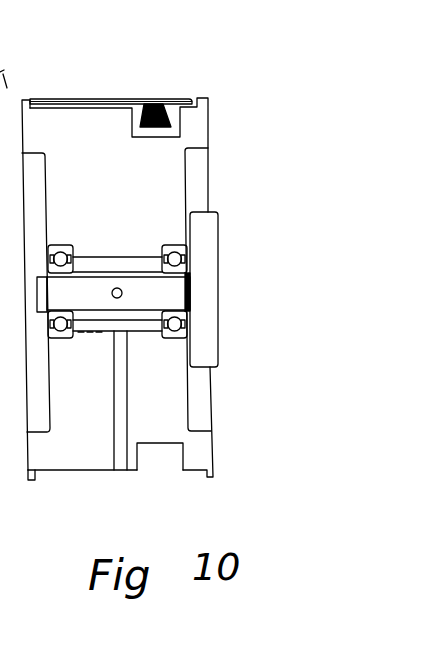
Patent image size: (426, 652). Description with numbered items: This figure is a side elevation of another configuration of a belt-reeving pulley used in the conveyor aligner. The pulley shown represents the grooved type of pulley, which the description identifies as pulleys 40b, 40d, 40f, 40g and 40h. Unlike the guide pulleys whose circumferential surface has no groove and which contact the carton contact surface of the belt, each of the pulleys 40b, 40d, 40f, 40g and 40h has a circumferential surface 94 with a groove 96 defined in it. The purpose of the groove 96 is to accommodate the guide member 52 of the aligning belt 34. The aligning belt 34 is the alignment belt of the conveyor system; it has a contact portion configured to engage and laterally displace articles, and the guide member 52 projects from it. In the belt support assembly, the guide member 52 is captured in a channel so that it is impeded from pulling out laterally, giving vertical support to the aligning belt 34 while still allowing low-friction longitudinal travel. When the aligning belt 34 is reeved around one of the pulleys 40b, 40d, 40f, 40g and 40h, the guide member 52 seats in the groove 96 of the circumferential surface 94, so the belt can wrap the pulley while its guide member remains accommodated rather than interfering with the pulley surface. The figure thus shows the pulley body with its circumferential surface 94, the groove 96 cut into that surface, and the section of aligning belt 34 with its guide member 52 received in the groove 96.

The aligning belt 34 is at (65, 93).
The guide member 52 is at (133, 98).
The pulley 40b is at (187, 273).
The pulley 40d is at (187, 273).
The pulley 40f is at (187, 273).
The pulley 40g is at (187, 273).
The pulley 40h is at (208, 125).
The circumferential surface 94 is at (76, 476).
The groove 96 is at (167, 444).